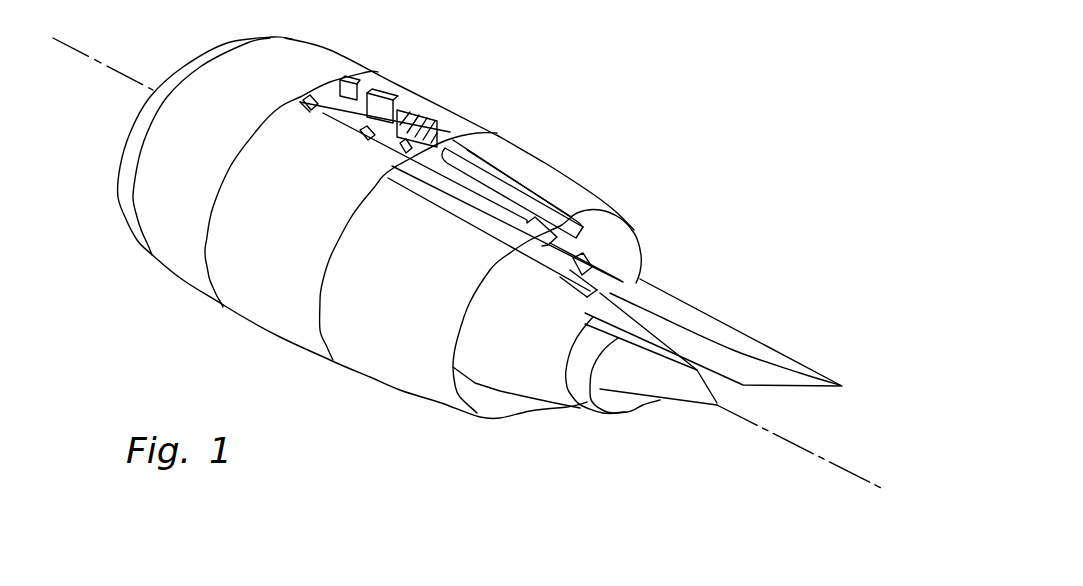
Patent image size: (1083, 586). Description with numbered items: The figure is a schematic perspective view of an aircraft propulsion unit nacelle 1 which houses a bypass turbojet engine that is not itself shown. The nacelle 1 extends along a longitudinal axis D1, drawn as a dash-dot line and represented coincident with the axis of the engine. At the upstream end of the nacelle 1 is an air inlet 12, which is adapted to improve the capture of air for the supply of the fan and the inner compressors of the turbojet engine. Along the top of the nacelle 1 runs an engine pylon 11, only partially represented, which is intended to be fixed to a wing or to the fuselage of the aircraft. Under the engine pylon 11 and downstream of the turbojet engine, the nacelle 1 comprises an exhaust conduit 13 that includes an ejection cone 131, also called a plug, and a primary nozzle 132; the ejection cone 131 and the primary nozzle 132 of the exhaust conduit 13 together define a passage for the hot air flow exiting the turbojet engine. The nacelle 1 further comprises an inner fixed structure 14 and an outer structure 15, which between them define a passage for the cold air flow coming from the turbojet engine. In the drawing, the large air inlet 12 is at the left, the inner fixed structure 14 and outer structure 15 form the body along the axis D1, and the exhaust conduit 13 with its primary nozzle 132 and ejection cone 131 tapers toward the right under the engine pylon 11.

The nacelle 1 is at (563, 57).
The longitudinal axis D1 is at (73, 47).
The engine pylon 11 is at (755, 347).
The air inlet 12 is at (166, 262).
The exhaust conduit 13 is at (613, 413).
The ejection cone 131 is at (648, 403).
The primary nozzle 132 is at (587, 397).
The inner fixed structure 14 is at (497, 362).
The outer structure 15 is at (474, 160).